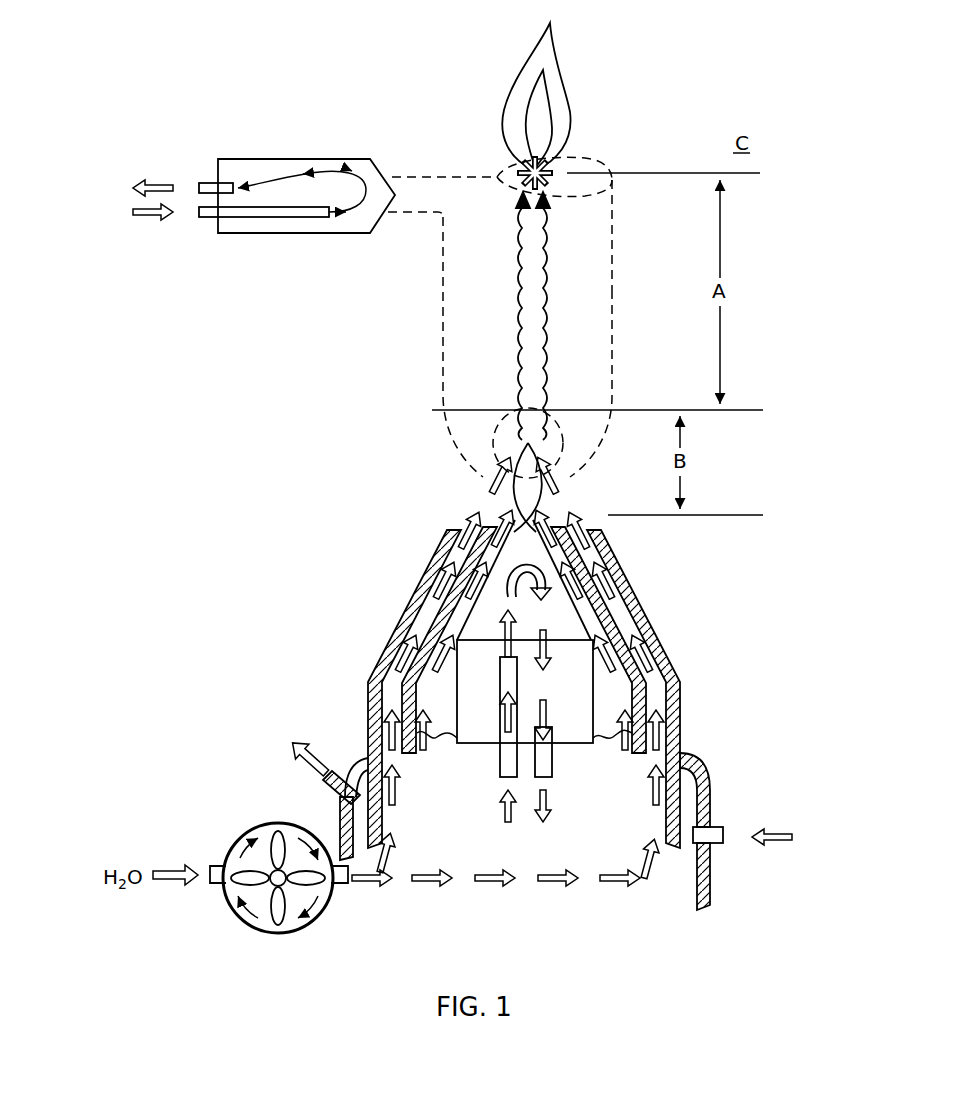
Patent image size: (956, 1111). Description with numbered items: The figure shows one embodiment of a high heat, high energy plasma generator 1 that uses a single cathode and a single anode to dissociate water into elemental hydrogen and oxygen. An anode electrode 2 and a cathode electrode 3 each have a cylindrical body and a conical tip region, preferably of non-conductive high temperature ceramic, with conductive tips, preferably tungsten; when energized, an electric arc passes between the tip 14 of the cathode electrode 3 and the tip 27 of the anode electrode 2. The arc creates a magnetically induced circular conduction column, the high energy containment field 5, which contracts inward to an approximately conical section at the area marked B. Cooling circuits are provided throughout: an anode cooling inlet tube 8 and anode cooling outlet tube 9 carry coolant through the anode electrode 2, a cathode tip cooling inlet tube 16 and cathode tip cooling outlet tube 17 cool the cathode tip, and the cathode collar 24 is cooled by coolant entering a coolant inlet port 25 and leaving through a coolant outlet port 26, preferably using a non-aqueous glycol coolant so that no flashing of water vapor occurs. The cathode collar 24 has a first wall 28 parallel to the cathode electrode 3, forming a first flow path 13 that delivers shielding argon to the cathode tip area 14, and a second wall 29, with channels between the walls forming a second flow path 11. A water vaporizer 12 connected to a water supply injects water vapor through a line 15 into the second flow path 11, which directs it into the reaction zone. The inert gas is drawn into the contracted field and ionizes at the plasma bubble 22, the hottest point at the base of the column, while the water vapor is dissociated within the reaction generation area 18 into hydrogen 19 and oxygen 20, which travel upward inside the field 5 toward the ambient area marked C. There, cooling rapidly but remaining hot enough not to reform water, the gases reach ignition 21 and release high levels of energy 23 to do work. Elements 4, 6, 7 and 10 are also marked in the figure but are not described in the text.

The plasma generator 1 is at (372, 410).
The anode electrode 2 is at (322, 159).
The cathode electrode 3 is at (545, 643).
The combustion zone boundary 4 is at (612, 240).
The high energy containment field 5 is at (612, 302).
The inlet tube 6 is at (500, 757).
The outlet tube 7 is at (552, 757).
The anode cooling inlet tube 8 is at (210, 218).
The anode cooling outlet tube 9 is at (215, 184).
The combustion chamber 10 is at (455, 627).
The second flow path 11 is at (392, 697).
The water vaporizer 12 is at (248, 842).
The first flow path 13 is at (418, 737).
The cathode tip 14 is at (497, 518).
The line 15 is at (418, 878).
The cathode tip cooling inlet tube 16 is at (504, 808).
The cathode tip cooling outlet tube 17 is at (548, 812).
The reaction generation area 18 is at (495, 437).
The hydrogen 19 is at (521, 340).
The oxygen 20 is at (544, 348).
The ignition 21 is at (548, 165).
The plasma bubble 22 is at (508, 498).
The energy 23 is at (556, 86).
The cathode collar 24 is at (393, 642).
The coolant inlet port 25 is at (770, 838).
The coolant outlet port 26 is at (300, 758).
The anode tip 27 is at (396, 195).
The first wall 28 is at (628, 638).
The second wall 29 is at (634, 593).